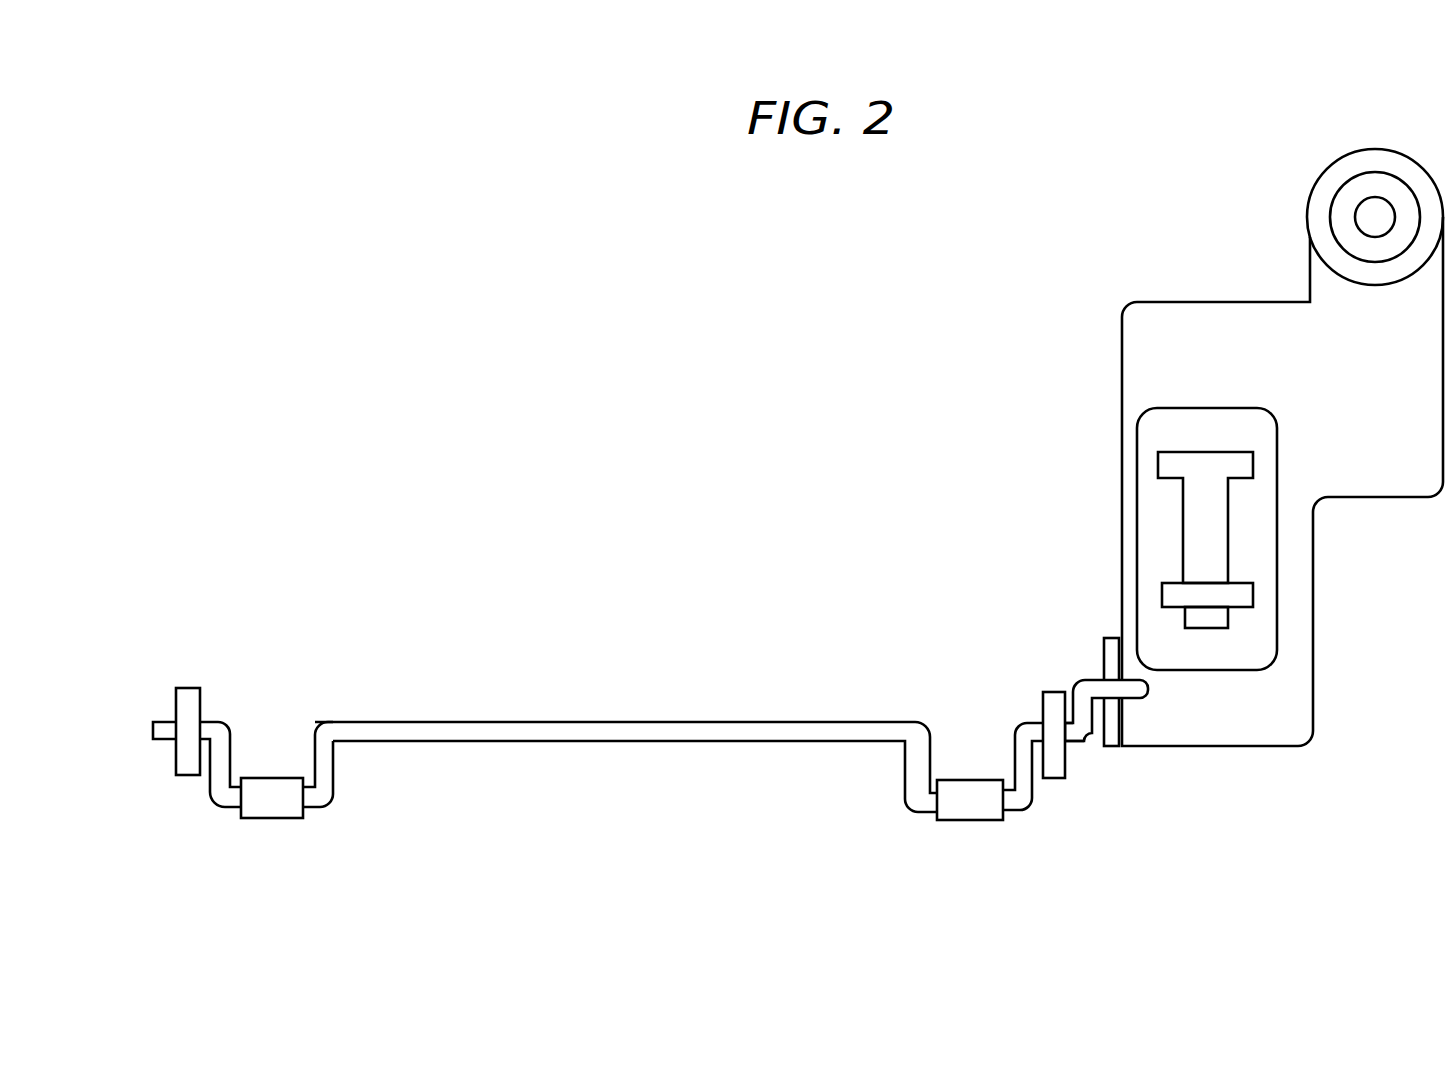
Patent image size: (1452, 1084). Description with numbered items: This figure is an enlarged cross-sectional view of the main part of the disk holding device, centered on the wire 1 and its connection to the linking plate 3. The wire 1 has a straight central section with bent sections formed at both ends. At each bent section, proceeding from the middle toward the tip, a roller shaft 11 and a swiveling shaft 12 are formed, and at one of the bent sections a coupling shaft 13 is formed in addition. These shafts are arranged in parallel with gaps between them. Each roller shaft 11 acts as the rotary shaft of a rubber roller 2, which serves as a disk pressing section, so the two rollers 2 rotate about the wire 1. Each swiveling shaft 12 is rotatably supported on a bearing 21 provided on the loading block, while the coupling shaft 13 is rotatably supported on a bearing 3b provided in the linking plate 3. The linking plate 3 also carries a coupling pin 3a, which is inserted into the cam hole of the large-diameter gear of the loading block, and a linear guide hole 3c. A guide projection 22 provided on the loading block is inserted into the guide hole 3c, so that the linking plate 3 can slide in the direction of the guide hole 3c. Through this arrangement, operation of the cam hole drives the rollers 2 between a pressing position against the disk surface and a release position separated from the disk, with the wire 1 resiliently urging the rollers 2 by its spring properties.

The wire 1 is at (513, 724).
The roller 2 is at (265, 787).
The linking plate 3 is at (1350, 485).
The coupling pin 3a is at (1363, 212).
The bearing 3b is at (1113, 748).
The guide hole 3c is at (1192, 522).
The roller shaft 11 is at (312, 800).
The swiveling shaft 12 is at (165, 740).
The coupling shaft 13 is at (1138, 692).
The bearing 21 is at (188, 770).
The guide projection 22 is at (1202, 593).